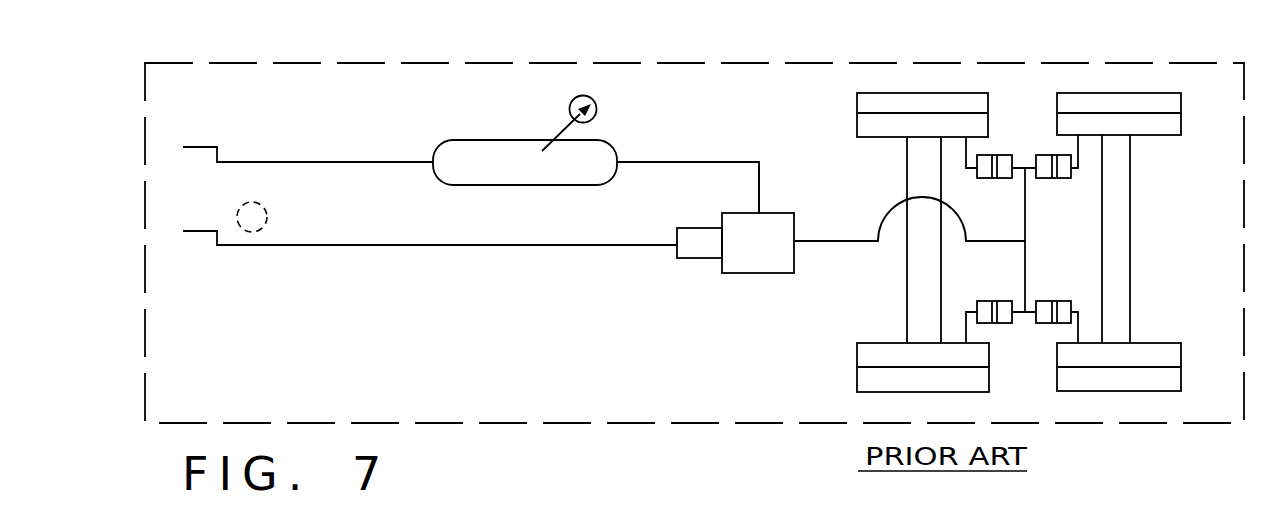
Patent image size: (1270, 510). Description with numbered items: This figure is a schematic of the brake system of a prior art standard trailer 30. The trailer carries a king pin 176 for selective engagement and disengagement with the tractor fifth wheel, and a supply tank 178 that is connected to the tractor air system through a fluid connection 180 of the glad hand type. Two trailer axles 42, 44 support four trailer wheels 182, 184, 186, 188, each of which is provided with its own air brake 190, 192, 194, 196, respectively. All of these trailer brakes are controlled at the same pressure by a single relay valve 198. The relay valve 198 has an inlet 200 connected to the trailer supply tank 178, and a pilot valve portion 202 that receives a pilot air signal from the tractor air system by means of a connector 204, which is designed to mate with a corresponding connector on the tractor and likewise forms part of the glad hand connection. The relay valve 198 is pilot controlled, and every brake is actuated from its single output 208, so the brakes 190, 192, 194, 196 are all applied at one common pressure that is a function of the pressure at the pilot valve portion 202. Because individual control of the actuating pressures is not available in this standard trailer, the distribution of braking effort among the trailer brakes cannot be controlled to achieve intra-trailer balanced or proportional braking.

The prior art standard trailer 30 is at (616, 434).
The trailer axle 42 is at (840, 324).
The trailer axle 44 is at (1166, 276).
The king pin 176 is at (263, 212).
The supply tank 178 is at (500, 153).
The fluid connection 180 is at (222, 150).
The trailer wheel 182 is at (1112, 98).
The trailer wheel 184 is at (1152, 378).
The trailer wheel 186 is at (912, 102).
The trailer wheel 188 is at (870, 379).
The air brake 190 is at (1058, 178).
The air brake 192 is at (1058, 301).
The air brake 194 is at (983, 178).
The air brake 196 is at (1002, 301).
The relay valve 198 is at (738, 217).
The inlet 200 is at (760, 190).
The pilot valve portion 202 is at (687, 260).
The connector 204 is at (215, 235).
The output 208 is at (810, 241).